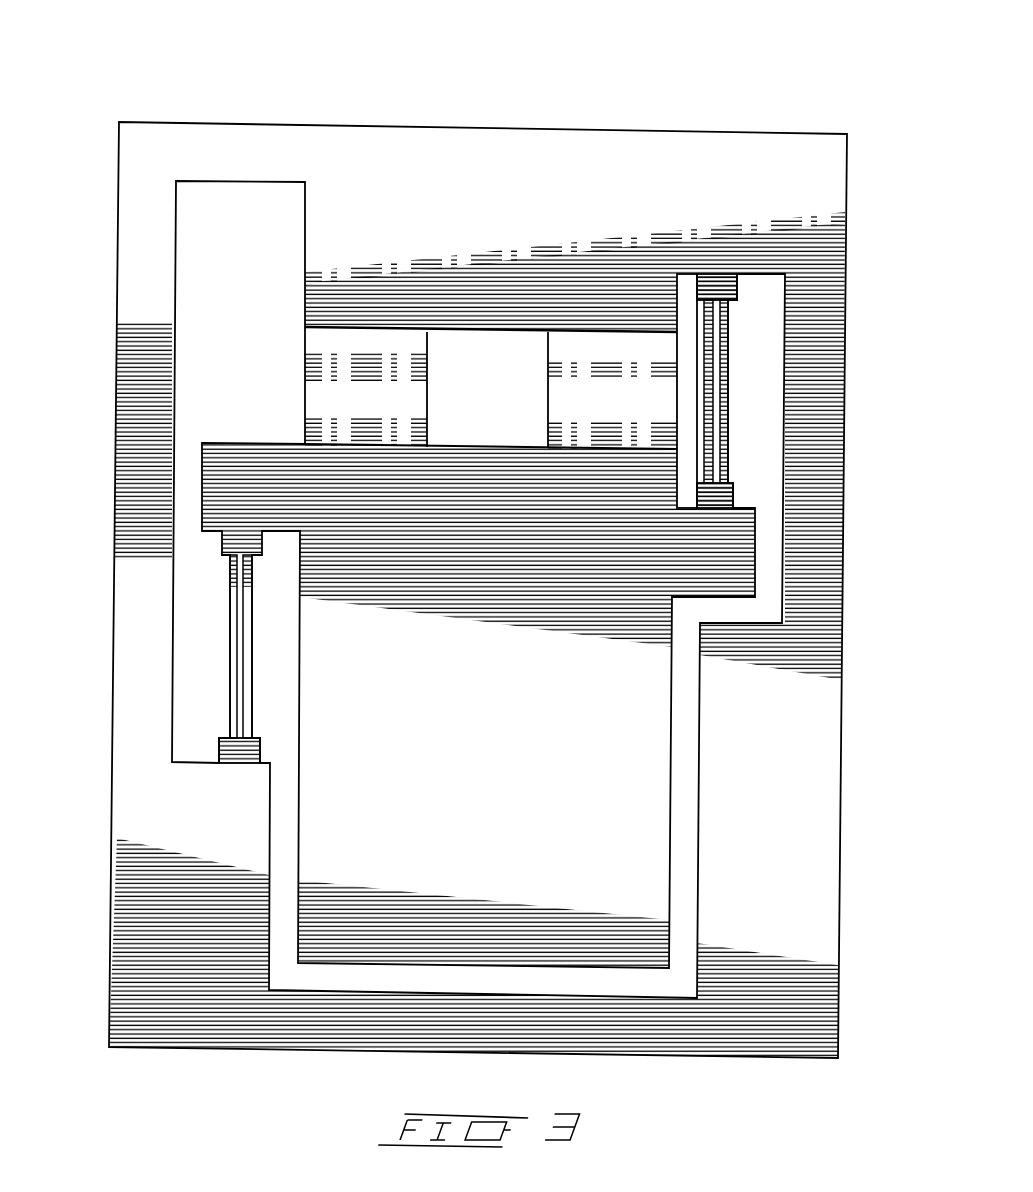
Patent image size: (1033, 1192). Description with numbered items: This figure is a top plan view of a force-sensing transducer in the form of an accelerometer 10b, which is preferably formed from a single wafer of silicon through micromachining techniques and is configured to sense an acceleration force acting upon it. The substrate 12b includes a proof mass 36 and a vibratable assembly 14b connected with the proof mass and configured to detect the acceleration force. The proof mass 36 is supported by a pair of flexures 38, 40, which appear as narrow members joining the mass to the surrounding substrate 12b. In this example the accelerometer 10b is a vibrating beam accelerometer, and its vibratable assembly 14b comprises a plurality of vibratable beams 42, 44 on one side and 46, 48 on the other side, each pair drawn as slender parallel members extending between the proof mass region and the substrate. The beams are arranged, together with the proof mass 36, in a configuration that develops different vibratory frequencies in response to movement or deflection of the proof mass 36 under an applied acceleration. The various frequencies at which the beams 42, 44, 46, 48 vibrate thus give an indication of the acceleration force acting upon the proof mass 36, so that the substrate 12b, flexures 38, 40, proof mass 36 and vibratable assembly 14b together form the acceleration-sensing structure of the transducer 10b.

The accelerometer 10b is at (240, 54).
The substrate 12b is at (515, 178).
The vibratable assembly 14b is at (486, 518).
The proof mass 36 is at (500, 762).
The flexure 38 is at (303, 385).
The flexure 40 is at (548, 392).
The vibratable beam 42 is at (227, 658).
The vibratable beam 44 is at (255, 678).
The vibratable beam 46 is at (703, 398).
The vibratable beam 48 is at (727, 410).